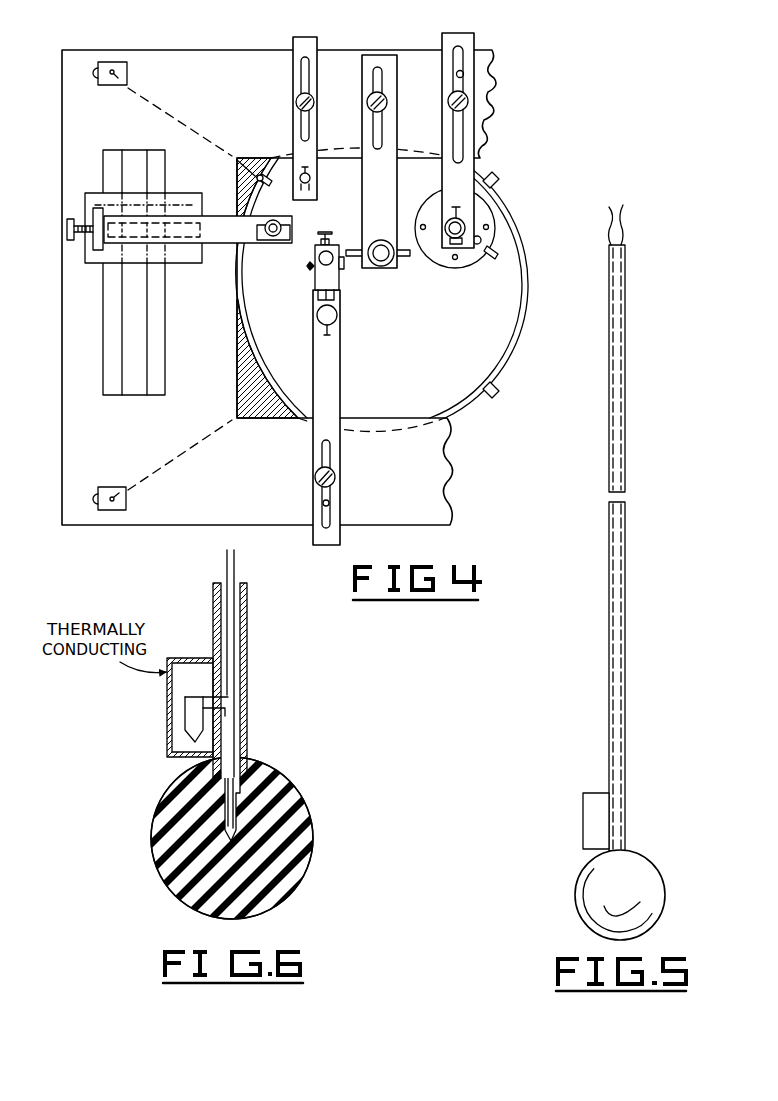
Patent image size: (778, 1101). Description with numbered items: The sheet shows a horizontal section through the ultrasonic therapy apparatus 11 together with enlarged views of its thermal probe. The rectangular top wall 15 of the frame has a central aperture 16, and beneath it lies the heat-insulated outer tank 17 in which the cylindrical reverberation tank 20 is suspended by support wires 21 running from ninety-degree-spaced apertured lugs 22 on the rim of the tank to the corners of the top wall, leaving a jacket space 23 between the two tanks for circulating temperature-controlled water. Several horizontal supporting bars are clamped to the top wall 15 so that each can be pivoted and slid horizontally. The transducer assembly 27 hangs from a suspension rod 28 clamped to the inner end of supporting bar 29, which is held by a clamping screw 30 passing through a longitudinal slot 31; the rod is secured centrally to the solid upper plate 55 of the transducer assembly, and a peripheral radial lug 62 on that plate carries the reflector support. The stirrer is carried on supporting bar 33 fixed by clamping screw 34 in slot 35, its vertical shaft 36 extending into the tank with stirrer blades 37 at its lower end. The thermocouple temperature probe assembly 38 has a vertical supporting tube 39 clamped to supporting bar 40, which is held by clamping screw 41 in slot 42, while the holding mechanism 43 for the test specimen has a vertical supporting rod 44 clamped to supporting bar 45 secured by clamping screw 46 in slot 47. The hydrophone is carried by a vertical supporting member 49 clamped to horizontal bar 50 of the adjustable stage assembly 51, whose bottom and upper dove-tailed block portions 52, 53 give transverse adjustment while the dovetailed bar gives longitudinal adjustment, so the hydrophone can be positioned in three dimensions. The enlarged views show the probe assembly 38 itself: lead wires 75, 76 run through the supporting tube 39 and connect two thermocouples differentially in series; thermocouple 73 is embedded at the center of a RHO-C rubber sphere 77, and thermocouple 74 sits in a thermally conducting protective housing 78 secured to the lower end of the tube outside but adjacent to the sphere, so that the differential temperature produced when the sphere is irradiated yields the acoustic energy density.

In FIG. 4, the ultrasonic therapy apparatus 11 is at (146, 32).
In FIG. 4, the top wall 15 is at (226, 50).
In FIG. 4, the central aperture 16 is at (237, 378).
In FIG. 4, the outer tank 17 is at (238, 180).
In FIG. 4, the reverberation tank 20 is at (522, 235).
In FIG. 4, the support wires 21 is at (242, 160).
In FIG. 4, the apertured lugs 22 is at (500, 185).
In FIG. 4, the jacket space 23 is at (262, 372).
In FIG. 4, the transducer assembly 27 is at (469, 268).
In FIG. 4, the suspension rod 28 is at (452, 218).
In FIG. 4, the horizontal supporting bar 29 is at (465, 177).
In FIG. 4, the clamping screw 30 is at (468, 101).
In FIG. 4, the longitudinal slot 31 is at (463, 74).
In FIG. 4, the horizontal supporting bar 33 is at (392, 150).
In FIG. 4, the clamping screw 34 is at (388, 102).
In FIG. 4, the longitudinal slot 35 is at (380, 76).
In FIG. 4, the vertical shaft 36 is at (381, 266).
In FIG. 4, the stirrer blades 37 is at (404, 262).
In FIG. 5, the thermocouple temperature probe assembly 38 is at (634, 661).
In FIG. 6, the thermocouple temperature probe assembly 38 is at (278, 741).
In FIG. 4, the supporting tube 39 is at (312, 179).
In FIG. 5, the supporting tube 39 is at (623, 560).
In FIG. 6, the supporting tube 39 is at (247, 625).
In FIG. 4, the horizontal supporting bar 40 is at (315, 148).
In FIG. 4, the clamping screw 41 is at (314, 102).
In FIG. 4, the longitudinal slot 42 is at (307, 79).
In FIG. 4, the holding mechanism 43 is at (335, 243).
In FIG. 4, the vertical supporting rod 44 is at (319, 322).
In FIG. 4, the horizontal supporting bar 45 is at (340, 390).
In FIG. 4, the clamping screw 46 is at (335, 477).
In FIG. 4, the longitudinal slot 47 is at (330, 505).
In FIG. 4, the vertical supporting member 49 is at (280, 243).
In FIG. 4, the horizontal supporting bar 50 is at (222, 245).
In FIG. 4, the adjustable stage assembly 51 is at (94, 270).
In FIG. 4, the bottom dove-tailed block portion 52 is at (165, 350).
In FIG. 4, the upper dove-tailed block portion 53 is at (90, 193).
In FIG. 4, the solid upper plate 55 is at (421, 208).
In FIG. 4, the peripheral radial lug 62 is at (497, 259).
In FIG. 6, the thermocouple 73 is at (239, 834).
In FIG. 6, the thermocouple 74 is at (185, 738).
In FIG. 5, the lead wire 75 is at (610, 229).
In FIG. 6, the lead wire 75 is at (225, 565).
In FIG. 5, the lead wire 76 is at (627, 218).
In FIG. 6, the lead wire 76 is at (238, 566).
In FIG. 5, the rubber sphere 77 is at (648, 876).
In FIG. 6, the rubber sphere 77 is at (300, 802).
In FIG. 5, the thermally conducting protective housing 78 is at (583, 810).
In FIG. 6, the thermally conducting protective housing 78 is at (167, 688).